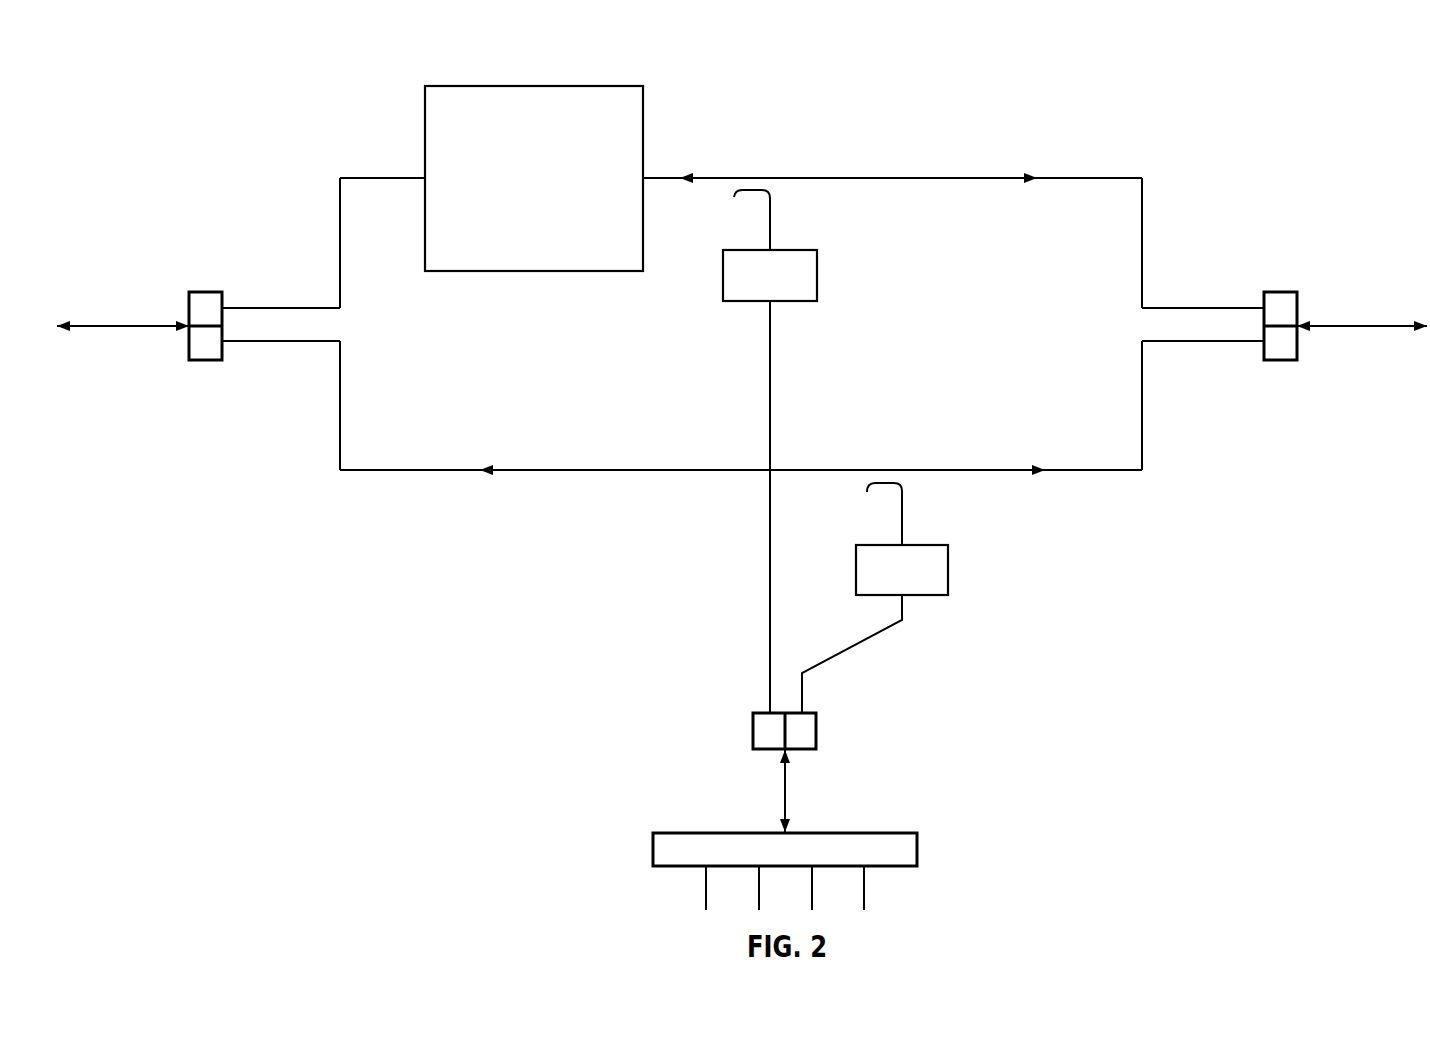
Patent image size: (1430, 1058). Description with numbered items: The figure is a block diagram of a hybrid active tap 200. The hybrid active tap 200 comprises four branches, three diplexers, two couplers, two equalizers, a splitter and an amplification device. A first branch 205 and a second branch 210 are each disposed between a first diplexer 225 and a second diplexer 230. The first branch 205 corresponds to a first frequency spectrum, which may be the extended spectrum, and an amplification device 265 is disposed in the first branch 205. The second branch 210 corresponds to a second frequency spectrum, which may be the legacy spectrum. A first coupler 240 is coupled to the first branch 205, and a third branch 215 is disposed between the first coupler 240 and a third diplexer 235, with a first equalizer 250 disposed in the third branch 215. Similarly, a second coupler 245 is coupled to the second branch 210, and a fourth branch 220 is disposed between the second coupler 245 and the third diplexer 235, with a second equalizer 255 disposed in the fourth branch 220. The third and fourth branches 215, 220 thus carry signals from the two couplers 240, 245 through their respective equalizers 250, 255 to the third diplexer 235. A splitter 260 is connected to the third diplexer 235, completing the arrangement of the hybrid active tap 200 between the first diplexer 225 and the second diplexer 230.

The hybrid active tap 200 is at (258, 74).
The first branch 205 is at (998, 178).
The second branch 210 is at (998, 470).
The third branch 215 is at (770, 412).
The fourth branch 220 is at (857, 643).
The first diplexer 225 is at (207, 292).
The second diplexer 230 is at (1280, 292).
The third diplexer 235 is at (753, 732).
The first coupler 240 is at (749, 190).
The second coupler 245 is at (900, 507).
The first equalizer 250 is at (743, 250).
The second equalizer 255 is at (856, 570).
The splitter 260 is at (688, 833).
The amplification device 265 is at (450, 86).